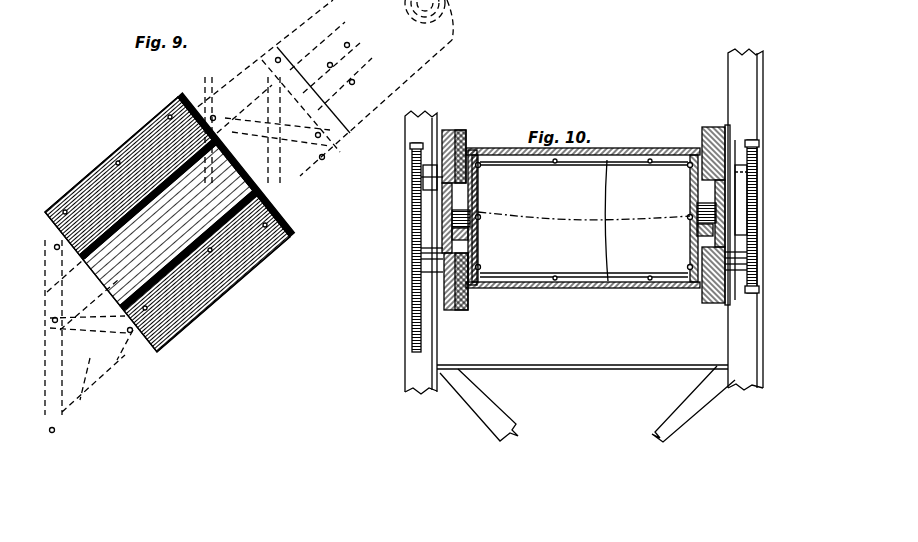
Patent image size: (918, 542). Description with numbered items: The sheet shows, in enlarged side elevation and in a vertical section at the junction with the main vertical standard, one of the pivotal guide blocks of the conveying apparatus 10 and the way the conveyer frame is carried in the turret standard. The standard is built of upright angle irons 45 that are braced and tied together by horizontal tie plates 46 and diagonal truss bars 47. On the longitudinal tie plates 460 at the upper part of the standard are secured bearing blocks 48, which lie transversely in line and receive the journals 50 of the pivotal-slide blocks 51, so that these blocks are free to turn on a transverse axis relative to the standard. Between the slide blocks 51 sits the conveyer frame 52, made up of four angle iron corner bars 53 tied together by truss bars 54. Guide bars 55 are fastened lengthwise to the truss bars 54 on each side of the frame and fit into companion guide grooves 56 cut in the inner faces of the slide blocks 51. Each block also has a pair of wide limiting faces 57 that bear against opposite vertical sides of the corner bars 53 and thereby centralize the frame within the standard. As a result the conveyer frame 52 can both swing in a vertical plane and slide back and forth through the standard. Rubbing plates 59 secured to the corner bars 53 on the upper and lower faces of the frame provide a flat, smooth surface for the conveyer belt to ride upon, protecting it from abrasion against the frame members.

In FIG. 9, the panel 10 is at (112, 157).
In FIG. 10, the upright angle irons 45 is at (406, 375).
In FIG. 10, the horizontal tie plates 46 is at (582, 345).
In FIG. 10, the diagonal truss bars 47 is at (505, 412).
In FIG. 10, the bearing blocks 48 is at (426, 295).
In FIG. 10, the longitudinal tie plates 460 is at (760, 152).
In FIG. 10, the journals 50 is at (420, 190).
In FIG. 9, the pivotal-slide blocks 51 is at (291, 232).
In FIG. 10, the pivotal-slide blocks 51 is at (452, 130).
In FIG. 9, the conveyer frame 52 is at (455, 42).
In FIG. 10, the conveyer frame 52 is at (480, 270).
In FIG. 9, the angle iron corner bars 53 is at (246, 74).
In FIG. 10, the angle iron corner bars 53 is at (490, 160).
In FIG. 9, the truss bars 54 is at (325, 142).
In FIG. 10, the truss bars 54 is at (584, 220).
In FIG. 9, the guide bars 55 is at (360, 60).
In FIG. 10, the guide bars 55 is at (478, 214).
In FIG. 9, the guide grooves 56 is at (163, 213).
In FIG. 10, the guide grooves 56 is at (694, 180).
In FIG. 9, the limiting faces 57 is at (160, 135).
In FIG. 10, the limiting faces 57 is at (467, 145).
In FIG. 10, the rubbing plates 59 is at (615, 148).